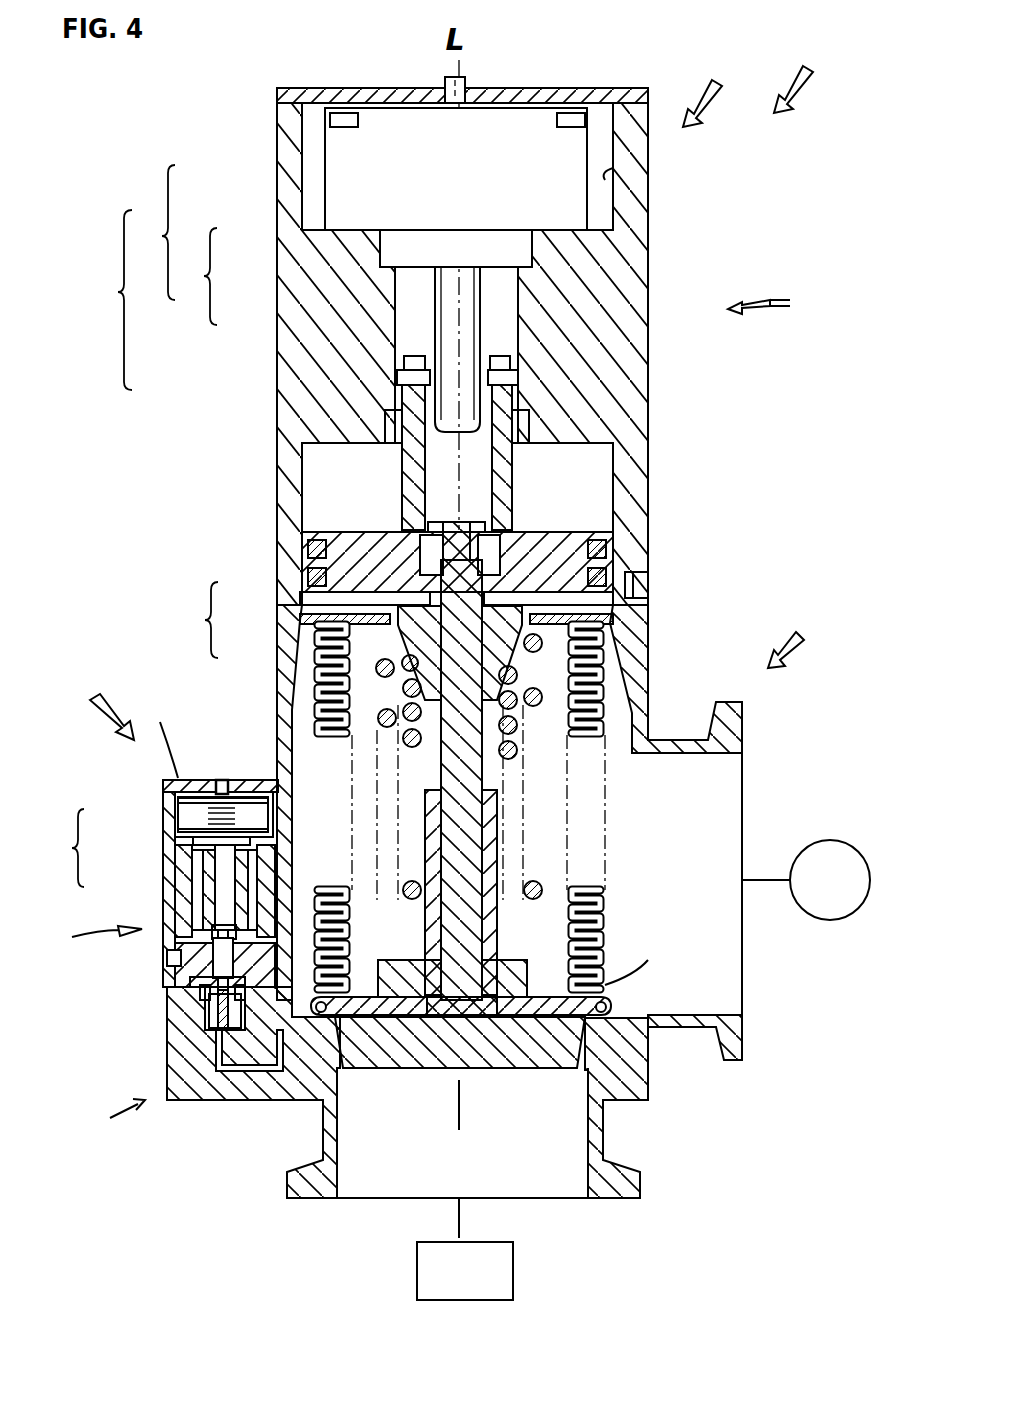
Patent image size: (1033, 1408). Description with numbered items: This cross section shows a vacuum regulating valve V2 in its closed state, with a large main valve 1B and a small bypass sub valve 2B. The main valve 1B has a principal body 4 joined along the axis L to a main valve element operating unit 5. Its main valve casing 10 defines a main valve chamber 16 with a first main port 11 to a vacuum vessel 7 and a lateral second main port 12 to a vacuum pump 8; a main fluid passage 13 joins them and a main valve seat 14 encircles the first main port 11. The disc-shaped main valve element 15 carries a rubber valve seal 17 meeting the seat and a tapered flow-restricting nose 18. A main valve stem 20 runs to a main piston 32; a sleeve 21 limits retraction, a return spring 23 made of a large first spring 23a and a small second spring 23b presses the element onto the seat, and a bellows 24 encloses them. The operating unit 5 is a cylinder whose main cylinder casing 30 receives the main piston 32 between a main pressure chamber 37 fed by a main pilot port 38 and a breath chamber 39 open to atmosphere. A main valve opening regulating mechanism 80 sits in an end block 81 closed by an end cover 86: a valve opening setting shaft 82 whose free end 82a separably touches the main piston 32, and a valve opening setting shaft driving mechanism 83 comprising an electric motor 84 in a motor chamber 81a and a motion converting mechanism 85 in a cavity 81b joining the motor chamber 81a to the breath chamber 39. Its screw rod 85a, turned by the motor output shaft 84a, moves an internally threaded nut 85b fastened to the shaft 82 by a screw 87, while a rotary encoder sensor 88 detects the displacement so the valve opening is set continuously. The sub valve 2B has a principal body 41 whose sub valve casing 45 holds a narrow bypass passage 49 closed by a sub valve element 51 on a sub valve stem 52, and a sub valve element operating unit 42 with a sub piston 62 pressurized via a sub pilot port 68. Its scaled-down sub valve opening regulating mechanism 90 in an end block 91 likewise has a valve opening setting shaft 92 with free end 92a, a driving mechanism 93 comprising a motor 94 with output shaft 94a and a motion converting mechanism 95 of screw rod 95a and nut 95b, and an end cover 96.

The main valve principal body 4 is at (793, 633).
The main valve element operating unit 5 is at (773, 304).
The vacuum vessel 7 is at (465, 1271).
The vacuum pump 8 is at (806, 880).
The main valve casing 10 is at (292, 702).
The first main port 11 is at (370, 1185).
The second main port 12 is at (728, 790).
The main fluid passage 13 is at (610, 978).
The main valve seat 14 is at (640, 1040).
The main valve element 15 is at (530, 1020).
The main valve chamber 16 is at (606, 722).
The valve seal 17 is at (590, 1006).
The nose 18 is at (420, 1045).
The main valve stem 20 is at (475, 820).
The sleeve 21 is at (490, 850).
The return spring 23 is at (198, 620).
The first spring 23a is at (420, 685).
The second spring 23b is at (410, 690).
The bellows 24 is at (556, 940).
The main cylinder casing 30 is at (312, 548).
The main piston 32 is at (600, 556).
The main pressure chamber 37 is at (620, 612).
The main pilot port 38 is at (650, 586).
The breath chamber 39 is at (345, 463).
The principal body 41 is at (108, 1120).
The sub valve element operating unit 42 is at (90, 941).
The sub valve casing 45 is at (178, 1050).
The bypass passage 49 is at (245, 1075).
The sub valve element 51 is at (205, 1080).
The sub valve stem 52 is at (213, 1010).
The sub piston 62 is at (180, 957).
The sub pilot port 68 is at (192, 982).
The main valve opening regulating mechanism 80 is at (107, 300).
The end block 81 is at (600, 275).
The motor chamber 81a is at (607, 172).
The cavity 81b is at (500, 325).
The valve opening setting shaft 82 is at (400, 405).
The free end 82a is at (520, 520).
The valve opening setting shaft driving mechanism 83 is at (153, 232).
The electric motor 84 is at (380, 200).
The output shaft 84a is at (466, 86).
The motion converting mechanism 85 is at (195, 276).
The screw rod 85a is at (395, 272).
The internally threaded nut 85b is at (437, 312).
The end cover 86 is at (385, 92).
The screw 87 is at (500, 380).
The sensor 88 is at (520, 249).
The sub valve opening regulating mechanism 90 is at (156, 736).
The end block 91 is at (166, 800).
The valve opening setting shaft 92 is at (190, 892).
The free end 92a is at (250, 906).
The valve opening setting shaft driving mechanism 93 is at (232, 790).
The electric motor 94 is at (256, 835).
The output shaft 94a is at (218, 778).
The motion converting mechanism 95 is at (160, 873).
The screw rod 95a is at (215, 872).
The internally threaded nut 95b is at (200, 848).
The end cover 96 is at (246, 800).
The main valve 1B is at (717, 86).
The sub valve 2B is at (103, 704).
The vacuum regulating valve V2 is at (805, 72).